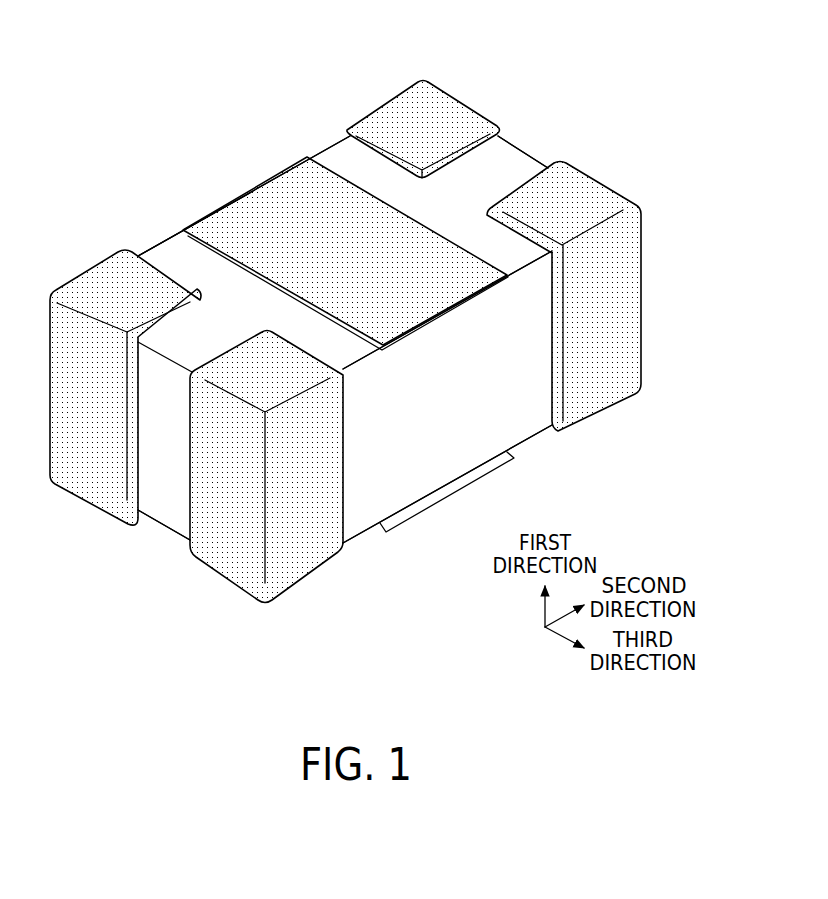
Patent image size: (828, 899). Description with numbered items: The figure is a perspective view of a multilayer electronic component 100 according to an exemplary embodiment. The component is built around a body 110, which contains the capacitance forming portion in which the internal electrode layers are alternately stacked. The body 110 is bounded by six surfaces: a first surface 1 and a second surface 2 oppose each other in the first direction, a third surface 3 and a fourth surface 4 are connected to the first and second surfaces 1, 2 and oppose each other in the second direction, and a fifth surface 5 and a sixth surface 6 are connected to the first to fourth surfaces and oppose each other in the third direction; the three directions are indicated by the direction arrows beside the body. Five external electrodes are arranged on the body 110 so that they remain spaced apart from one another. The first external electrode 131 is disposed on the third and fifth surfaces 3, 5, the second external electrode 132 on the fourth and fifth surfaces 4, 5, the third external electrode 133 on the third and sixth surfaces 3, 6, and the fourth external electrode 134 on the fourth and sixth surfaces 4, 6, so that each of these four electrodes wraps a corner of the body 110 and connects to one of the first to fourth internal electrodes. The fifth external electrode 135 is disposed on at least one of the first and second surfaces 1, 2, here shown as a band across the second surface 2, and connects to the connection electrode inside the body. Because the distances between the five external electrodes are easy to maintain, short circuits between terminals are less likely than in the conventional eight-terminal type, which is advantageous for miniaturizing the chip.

The multilayer electronic component 100 is at (177, 34).
The body 110 is at (330, 158).
The first surface 1 is at (362, 538).
The second surface 2 is at (338, 140).
The third surface 3 is at (162, 503).
The fourth surface 4 is at (527, 154).
The fifth surface 5 is at (155, 242).
The sixth surface 6 is at (500, 415).
The first external electrode 131 is at (82, 278).
The second external electrode 132 is at (412, 104).
The third external electrode 133 is at (207, 383).
The fourth external electrode 134 is at (588, 198).
The fifth external electrode 135 is at (232, 208).